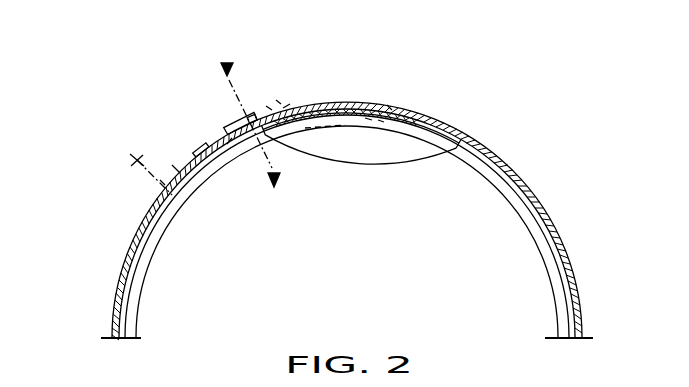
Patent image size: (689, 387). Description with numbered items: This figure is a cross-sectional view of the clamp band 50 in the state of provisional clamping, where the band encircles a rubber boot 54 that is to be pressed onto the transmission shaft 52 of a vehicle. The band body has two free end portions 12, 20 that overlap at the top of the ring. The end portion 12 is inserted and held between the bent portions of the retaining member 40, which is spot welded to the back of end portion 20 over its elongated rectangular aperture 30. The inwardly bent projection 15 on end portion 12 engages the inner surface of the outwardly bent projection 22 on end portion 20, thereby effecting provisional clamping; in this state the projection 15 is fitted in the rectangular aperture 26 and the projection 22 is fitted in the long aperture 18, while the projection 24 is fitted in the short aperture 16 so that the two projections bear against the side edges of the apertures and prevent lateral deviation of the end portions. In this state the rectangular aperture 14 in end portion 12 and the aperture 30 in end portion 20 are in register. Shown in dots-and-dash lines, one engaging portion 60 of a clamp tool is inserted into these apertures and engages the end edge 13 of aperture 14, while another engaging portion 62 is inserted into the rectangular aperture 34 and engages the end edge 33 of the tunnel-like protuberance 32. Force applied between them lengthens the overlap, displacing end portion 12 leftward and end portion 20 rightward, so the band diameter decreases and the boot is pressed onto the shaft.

The end portion 12 is at (310, 105).
The end edge 13 is at (268, 105).
The rectangular aperture 14 is at (290, 104).
The projection 15 is at (380, 120).
The short aperture 16 is at (345, 107).
The long aperture 18 is at (425, 113).
The end portion 20 is at (420, 127).
The projection 22 is at (387, 105).
The projection 24 is at (343, 112).
The rectangular aperture 26 is at (368, 118).
The elongated rectangular aperture 30 is at (232, 138).
The tunnel-like protuberance 32 is at (185, 160).
The end edge 33 is at (172, 165).
The rectangular aperture 34 is at (165, 185).
The retaining member 40 is at (230, 112).
The clamp band 50 is at (512, 158).
The transmission shaft 52 is at (156, 265).
The rubber boot 54 is at (134, 293).
The engaging portion 60 is at (278, 100).
The engaging portion 62 is at (137, 160).